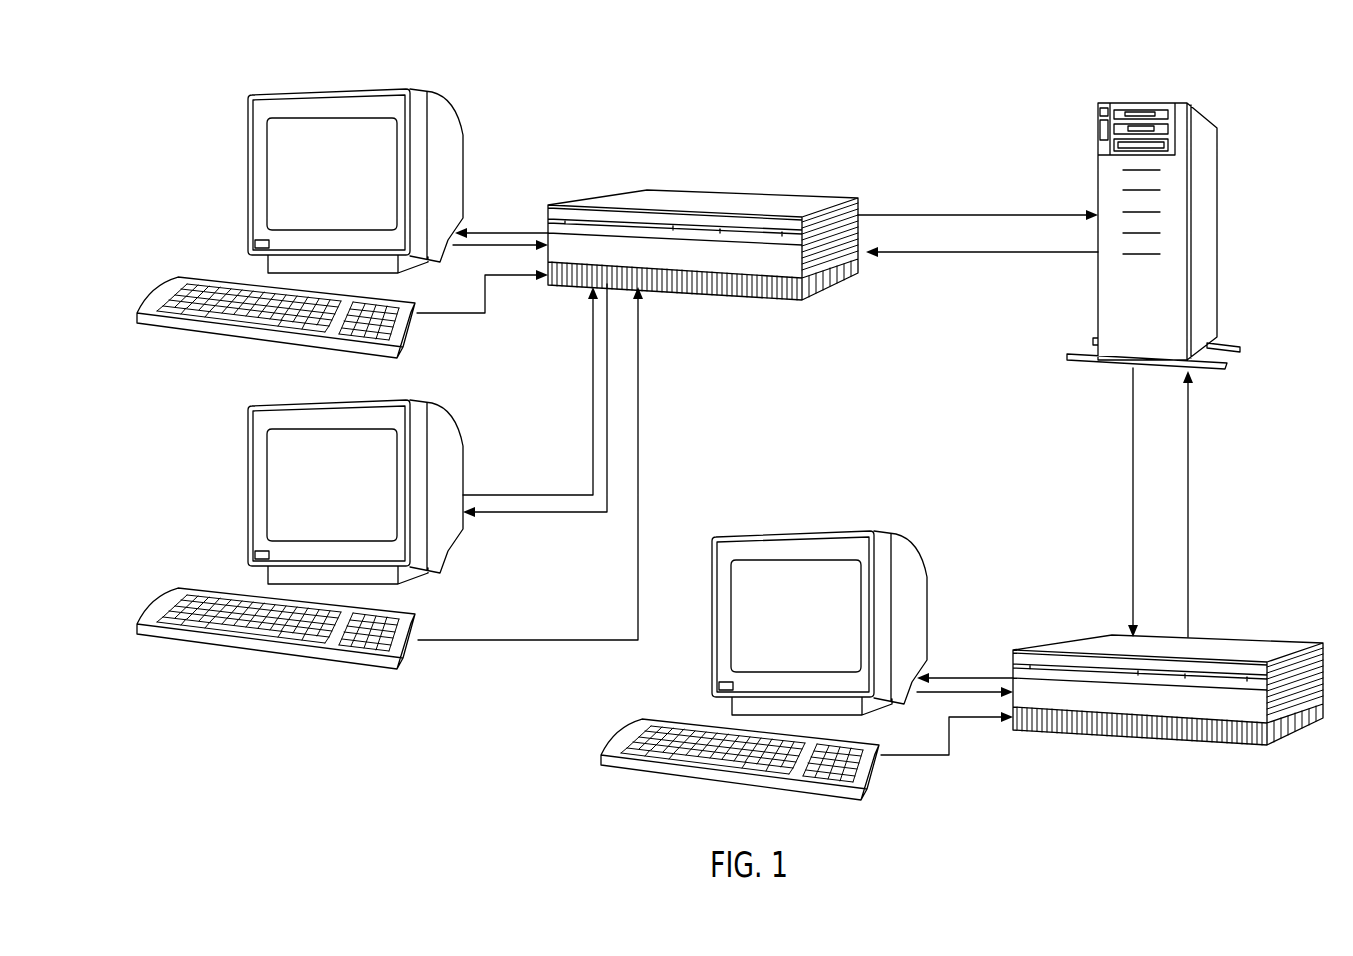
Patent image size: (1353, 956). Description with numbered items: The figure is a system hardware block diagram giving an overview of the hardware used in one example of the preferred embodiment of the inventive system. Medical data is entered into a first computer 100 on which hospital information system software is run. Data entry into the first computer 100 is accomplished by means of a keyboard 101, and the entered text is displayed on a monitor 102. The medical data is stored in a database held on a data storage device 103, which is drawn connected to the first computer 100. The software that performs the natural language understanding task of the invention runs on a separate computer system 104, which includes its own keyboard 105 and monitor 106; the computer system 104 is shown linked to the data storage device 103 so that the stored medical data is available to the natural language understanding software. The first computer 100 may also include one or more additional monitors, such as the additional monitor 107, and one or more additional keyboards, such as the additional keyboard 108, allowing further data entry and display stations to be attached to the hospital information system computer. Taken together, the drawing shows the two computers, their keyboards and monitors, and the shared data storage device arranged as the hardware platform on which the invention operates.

The first computer 100 is at (757, 196).
The keyboard 101 is at (195, 282).
The monitor 102 is at (283, 165).
The data storage device 103 is at (1197, 187).
The computer system 104 is at (1240, 648).
The keyboard 105 is at (720, 773).
The monitor 106 is at (819, 594).
The additional monitor 107 is at (308, 492).
The additional keyboard 108 is at (276, 604).